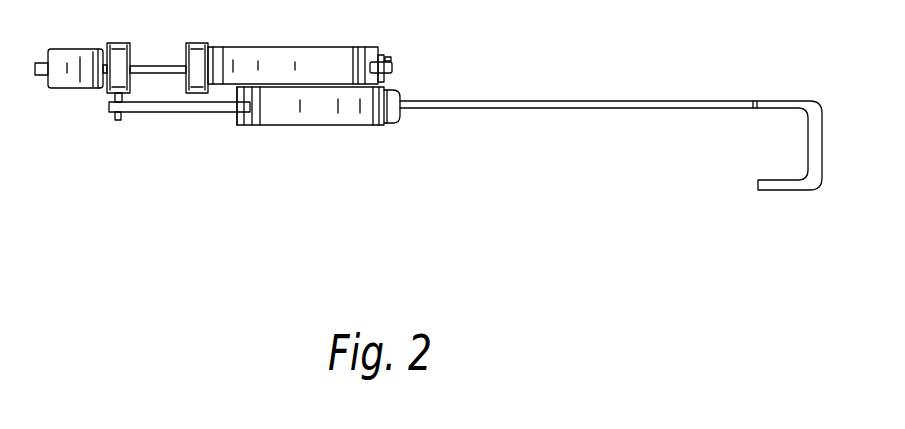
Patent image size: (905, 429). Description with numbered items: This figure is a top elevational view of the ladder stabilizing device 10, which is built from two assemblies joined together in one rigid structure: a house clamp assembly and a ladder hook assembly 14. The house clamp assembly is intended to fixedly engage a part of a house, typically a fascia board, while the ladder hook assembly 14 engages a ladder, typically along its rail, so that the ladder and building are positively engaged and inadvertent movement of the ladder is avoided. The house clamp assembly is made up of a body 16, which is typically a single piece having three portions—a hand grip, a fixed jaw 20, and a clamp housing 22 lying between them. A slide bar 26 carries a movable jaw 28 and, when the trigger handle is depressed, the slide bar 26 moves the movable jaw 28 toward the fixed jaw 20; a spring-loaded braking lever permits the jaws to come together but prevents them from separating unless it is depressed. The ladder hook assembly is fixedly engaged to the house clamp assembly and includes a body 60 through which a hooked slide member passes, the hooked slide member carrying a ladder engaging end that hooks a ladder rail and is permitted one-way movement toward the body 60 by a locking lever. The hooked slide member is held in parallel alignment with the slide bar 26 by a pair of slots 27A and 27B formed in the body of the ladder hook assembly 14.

The ladder stabilizing device 10 is at (197, 185).
The ladder hook assembly 14 is at (360, 137).
The body 16 is at (343, 47).
The fixed jaw 20 is at (198, 42).
The clamp housing 22 is at (268, 47).
The slide bar 26 is at (160, 63).
The slot 27A is at (400, 110).
The slot 27B is at (237, 118).
The movable jaw 28 is at (82, 48).
The ladder hook assembly body 60 is at (310, 127).